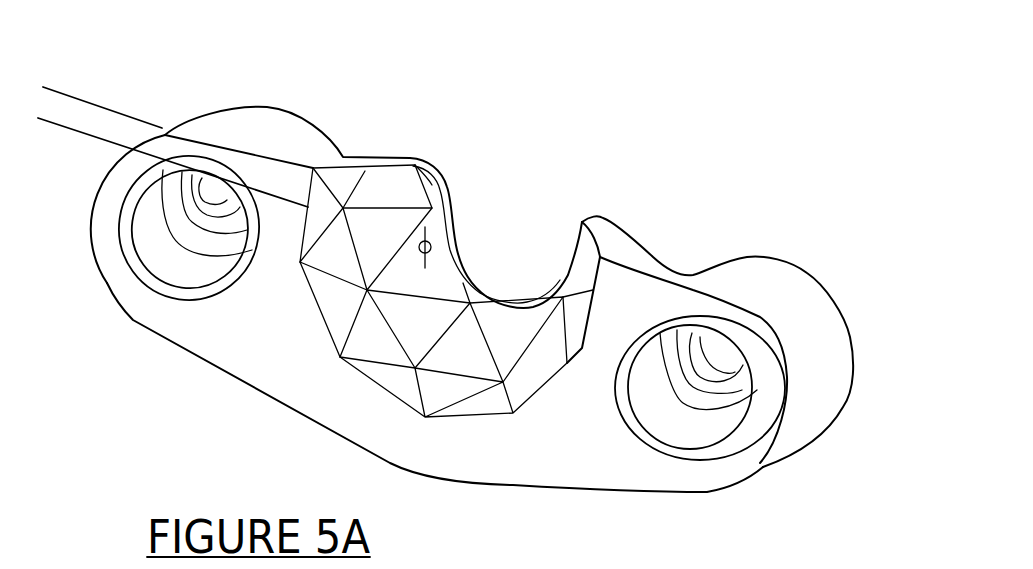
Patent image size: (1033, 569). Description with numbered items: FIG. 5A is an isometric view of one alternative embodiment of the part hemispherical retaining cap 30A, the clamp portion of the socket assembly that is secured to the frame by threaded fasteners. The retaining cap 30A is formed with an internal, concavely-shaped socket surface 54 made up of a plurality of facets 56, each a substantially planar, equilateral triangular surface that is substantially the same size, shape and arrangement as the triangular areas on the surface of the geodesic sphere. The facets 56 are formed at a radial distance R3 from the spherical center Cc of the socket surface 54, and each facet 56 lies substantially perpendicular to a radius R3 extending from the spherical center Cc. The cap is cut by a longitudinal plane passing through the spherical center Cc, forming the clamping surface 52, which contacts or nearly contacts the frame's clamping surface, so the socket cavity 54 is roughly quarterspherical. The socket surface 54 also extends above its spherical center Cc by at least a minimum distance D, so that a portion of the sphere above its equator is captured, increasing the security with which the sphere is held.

The retaining cap 30A is at (636, 210).
The clamping surface 52 is at (260, 345).
The concavely-shaped socket surface 54 is at (472, 358).
The facets 56 is at (372, 226).
The radial distance R3 is at (396, 236).
The spherical center Cc is at (382, 246).
The minimum distance D is at (60, 35).